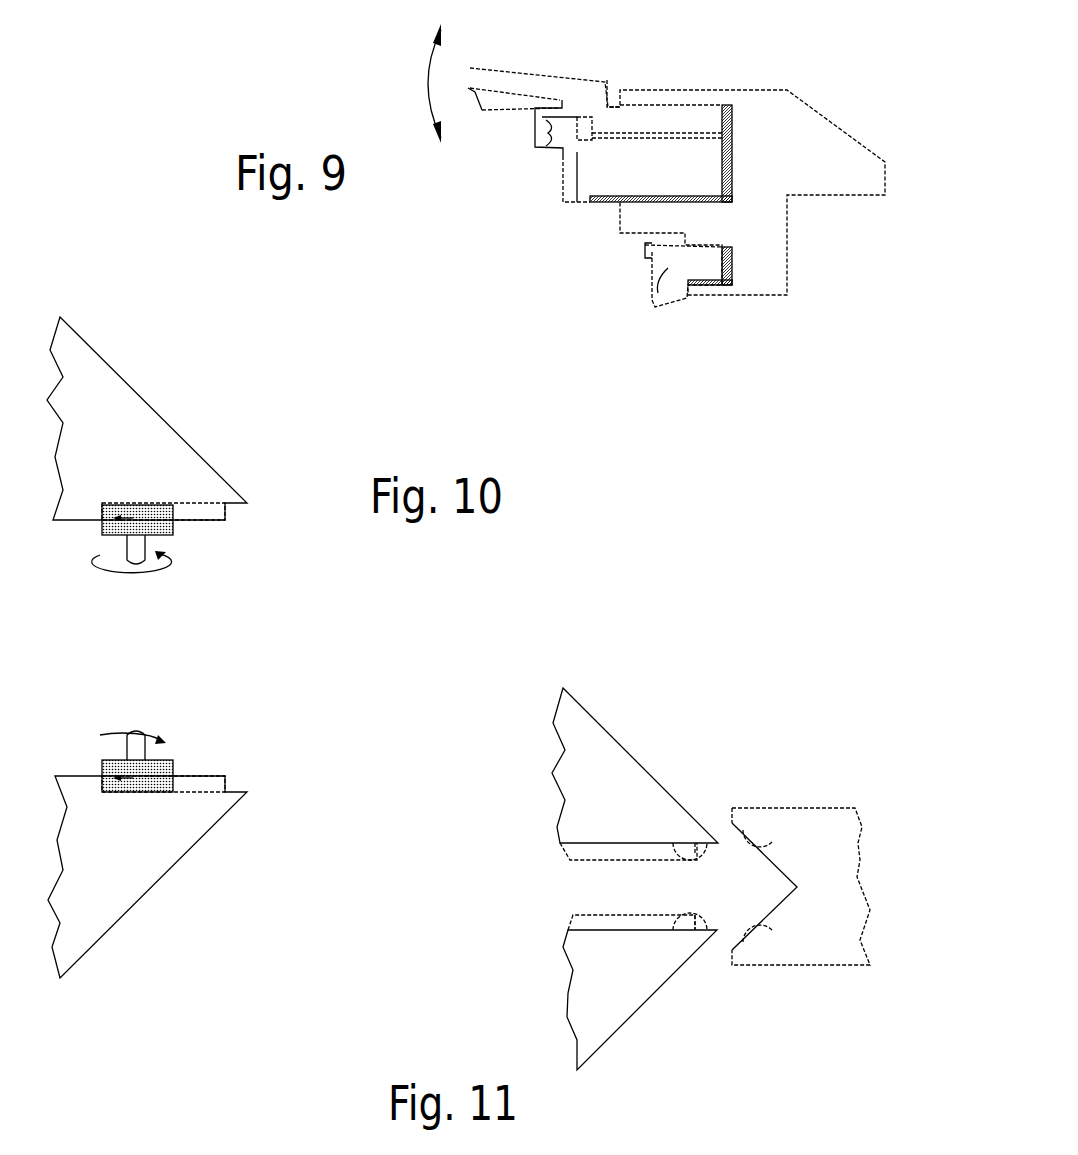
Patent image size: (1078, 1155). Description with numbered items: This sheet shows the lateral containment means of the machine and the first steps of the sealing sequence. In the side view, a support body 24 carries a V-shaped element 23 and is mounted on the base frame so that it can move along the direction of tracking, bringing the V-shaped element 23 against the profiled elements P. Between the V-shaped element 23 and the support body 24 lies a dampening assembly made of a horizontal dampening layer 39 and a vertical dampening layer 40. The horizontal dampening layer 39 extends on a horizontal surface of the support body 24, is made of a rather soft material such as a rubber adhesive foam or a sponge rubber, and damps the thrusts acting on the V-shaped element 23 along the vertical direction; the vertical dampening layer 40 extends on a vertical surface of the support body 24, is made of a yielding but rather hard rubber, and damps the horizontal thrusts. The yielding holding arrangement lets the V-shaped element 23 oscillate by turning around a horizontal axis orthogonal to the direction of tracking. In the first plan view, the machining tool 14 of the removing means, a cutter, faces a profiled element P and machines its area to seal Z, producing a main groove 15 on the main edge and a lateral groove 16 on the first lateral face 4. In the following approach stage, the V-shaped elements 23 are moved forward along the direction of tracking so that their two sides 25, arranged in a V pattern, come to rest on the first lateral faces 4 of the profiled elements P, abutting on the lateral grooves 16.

In FIG. 10, the first lateral face 4 is at (165, 420).
In FIG. 11, the first lateral face 4 is at (167, 873).
In FIG. 10, the machining tool 14 is at (163, 525).
In FIG. 11, the machining tool 14 is at (160, 770).
In FIG. 10, the main groove 15 is at (200, 510).
In FIG. 11, the main groove 15 is at (200, 785).
In FIG. 10, the lateral groove 16 is at (237, 507).
In FIG. 11, the lateral groove 16 is at (237, 790).
In FIG. 9, the V-shaped element 23 is at (613, 165).
In FIG. 11, the V-shaped element 23 is at (847, 900).
In FIG. 9, the support body 24 is at (797, 133).
In FIG. 11, the side 25 is at (772, 842).
In FIG. 9, the horizontal dampening layer 39 is at (713, 203).
In FIG. 9, the vertical dampening layer 40 is at (732, 152).
In FIG. 10, the profiled element P is at (127, 377).
In FIG. 11, the profiled element P is at (125, 922).
In FIG. 10, the area to seal Z is at (72, 520).
In FIG. 11, the area to seal Z is at (72, 772).